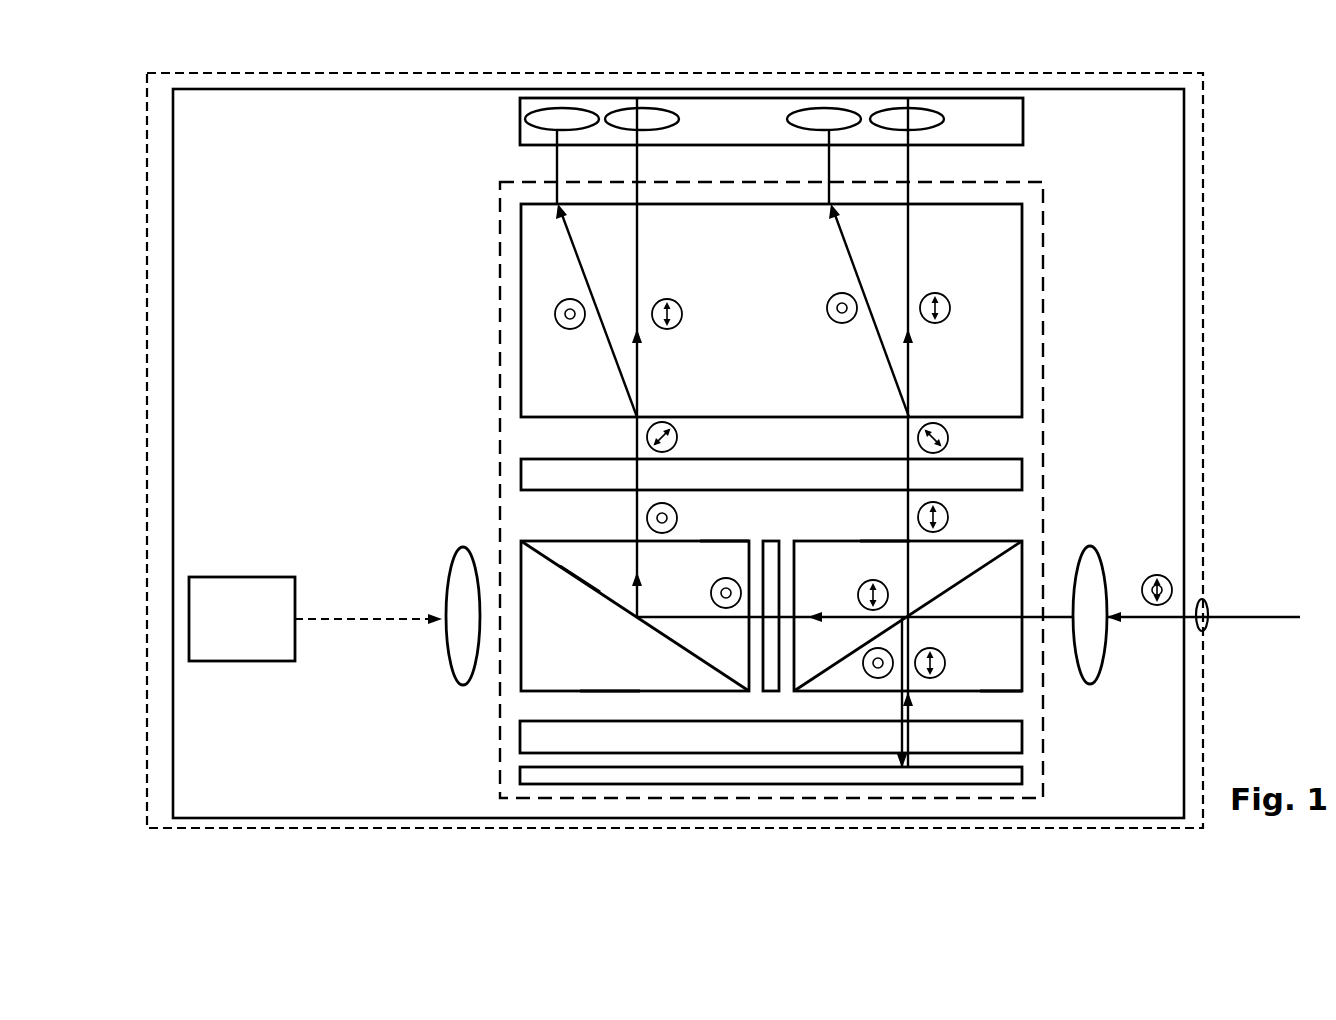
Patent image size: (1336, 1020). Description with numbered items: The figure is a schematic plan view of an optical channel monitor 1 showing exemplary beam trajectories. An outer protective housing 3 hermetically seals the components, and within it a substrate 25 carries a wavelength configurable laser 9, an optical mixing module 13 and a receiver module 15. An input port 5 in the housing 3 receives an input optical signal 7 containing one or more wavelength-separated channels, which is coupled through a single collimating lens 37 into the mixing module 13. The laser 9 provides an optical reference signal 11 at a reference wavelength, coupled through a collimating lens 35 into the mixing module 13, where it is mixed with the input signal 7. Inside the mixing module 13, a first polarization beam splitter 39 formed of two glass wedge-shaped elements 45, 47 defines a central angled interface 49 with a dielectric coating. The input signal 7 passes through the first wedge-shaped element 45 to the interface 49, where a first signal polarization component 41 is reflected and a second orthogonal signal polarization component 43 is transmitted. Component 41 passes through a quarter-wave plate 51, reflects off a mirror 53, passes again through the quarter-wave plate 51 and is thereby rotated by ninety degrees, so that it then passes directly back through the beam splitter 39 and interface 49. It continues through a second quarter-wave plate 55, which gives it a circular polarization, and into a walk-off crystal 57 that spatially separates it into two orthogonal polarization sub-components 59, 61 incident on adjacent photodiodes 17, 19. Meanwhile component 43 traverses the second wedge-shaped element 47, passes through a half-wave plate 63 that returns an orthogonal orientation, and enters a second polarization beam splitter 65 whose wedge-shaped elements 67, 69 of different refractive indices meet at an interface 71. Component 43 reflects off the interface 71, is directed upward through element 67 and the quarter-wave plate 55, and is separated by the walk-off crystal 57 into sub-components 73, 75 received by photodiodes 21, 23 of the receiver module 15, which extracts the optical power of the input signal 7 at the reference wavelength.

The optical channel monitor 1 is at (764, 46).
The outer protective housing 3 is at (343, 72).
The input port 5 is at (1205, 630).
The input optical signal 7 is at (1228, 617).
The wavelength configurable laser 9 is at (243, 577).
The optical reference signal 11 is at (364, 619).
The optical mixing module 13 is at (1046, 190).
The receiver module 15 is at (1023, 107).
The photodiode 17 is at (906, 108).
The photodiode 19 is at (823, 108).
The photodiode 21 is at (642, 108).
The photodiode 23 is at (562, 108).
The substrate 25 is at (263, 88).
The collimating lens 35 is at (462, 565).
The collimating lens 37 is at (1090, 560).
The first polarization beam splitter 39 is at (1020, 545).
The first signal polarization component 41 is at (901, 680).
The second orthogonal signal polarization component 43 is at (856, 617).
The first wedge-shaped element 45 is at (1010, 673).
The second wedge-shaped element 47 is at (890, 556).
The central angled interface 49 is at (965, 570).
The quarter-wave plate 51 is at (520, 747).
The mirror 53 is at (1022, 778).
The second quarter-wave plate 55 is at (1022, 470).
The walk-off crystal 57 is at (1022, 292).
The polarization sub-component 59 is at (909, 273).
The polarization sub-component 61 is at (846, 260).
The half-wave plate 63 is at (775, 540).
The second polarization beam splitter 65 is at (521, 552).
The wedge-shaped element 67 is at (682, 557).
The wedge-shaped element 69 is at (612, 673).
The interface 71 is at (562, 563).
The polarization sub-component 73 is at (637, 278).
The polarization sub-component 75 is at (578, 260).